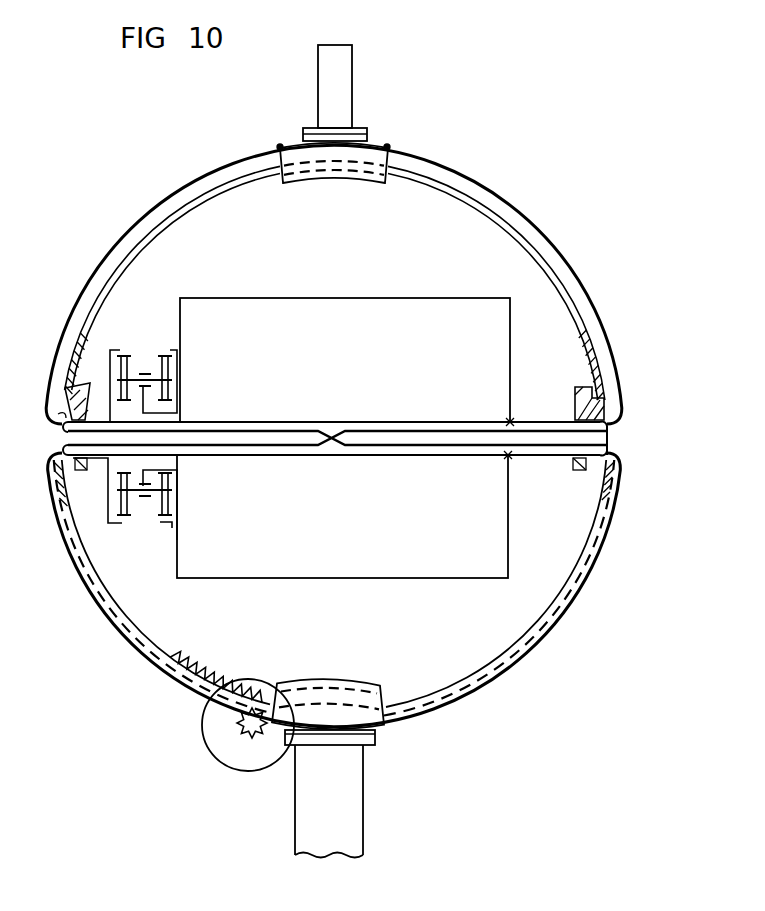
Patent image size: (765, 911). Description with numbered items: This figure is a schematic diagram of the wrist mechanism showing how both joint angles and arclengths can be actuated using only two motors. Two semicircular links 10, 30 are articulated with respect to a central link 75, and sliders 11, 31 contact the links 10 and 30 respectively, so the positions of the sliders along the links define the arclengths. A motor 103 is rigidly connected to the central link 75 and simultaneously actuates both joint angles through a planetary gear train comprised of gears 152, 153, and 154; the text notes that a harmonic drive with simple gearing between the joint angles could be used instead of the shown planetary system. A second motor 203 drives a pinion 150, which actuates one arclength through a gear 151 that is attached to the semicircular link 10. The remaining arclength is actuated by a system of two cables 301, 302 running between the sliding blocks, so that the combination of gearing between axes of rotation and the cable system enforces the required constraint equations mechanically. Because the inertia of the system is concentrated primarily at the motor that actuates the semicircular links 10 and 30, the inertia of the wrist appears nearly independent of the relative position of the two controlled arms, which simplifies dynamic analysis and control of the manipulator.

The semicircular link 10 is at (152, 638).
The slider 11 is at (368, 720).
The semicircular link 30 is at (427, 181).
The slider 31 is at (372, 153).
The central link 75 is at (534, 421).
The motor 103 is at (410, 378).
The pinion 150 is at (236, 733).
The gear 151 is at (168, 667).
The gear 152 is at (131, 378).
The gear 153 is at (166, 530).
The gear 154 is at (110, 373).
The motor 203 is at (233, 752).
The cable 301 is at (488, 188).
The cable 302 is at (531, 656).